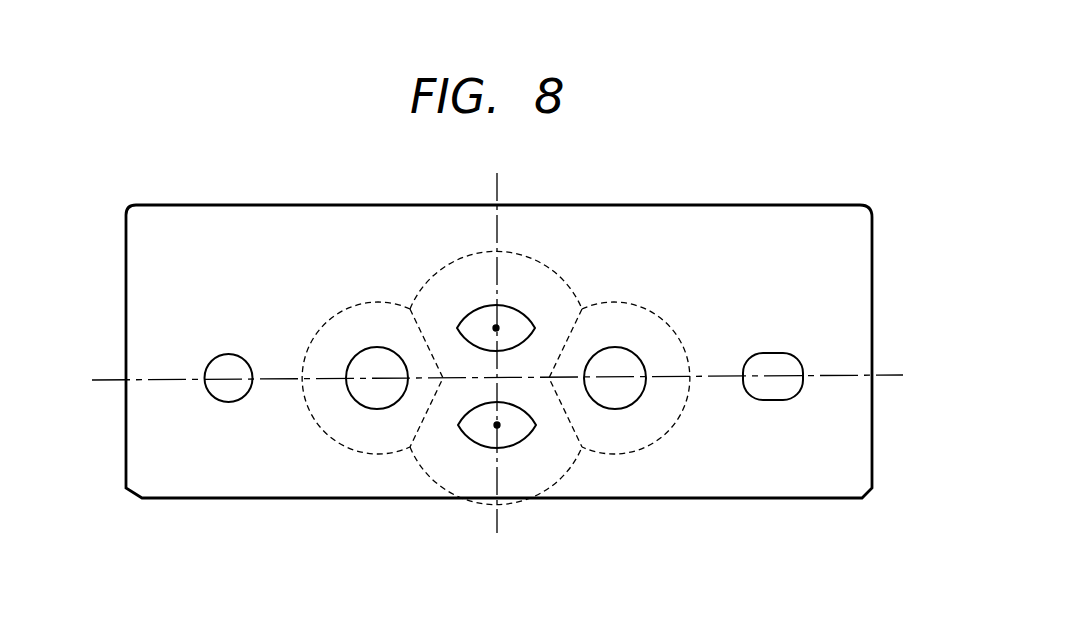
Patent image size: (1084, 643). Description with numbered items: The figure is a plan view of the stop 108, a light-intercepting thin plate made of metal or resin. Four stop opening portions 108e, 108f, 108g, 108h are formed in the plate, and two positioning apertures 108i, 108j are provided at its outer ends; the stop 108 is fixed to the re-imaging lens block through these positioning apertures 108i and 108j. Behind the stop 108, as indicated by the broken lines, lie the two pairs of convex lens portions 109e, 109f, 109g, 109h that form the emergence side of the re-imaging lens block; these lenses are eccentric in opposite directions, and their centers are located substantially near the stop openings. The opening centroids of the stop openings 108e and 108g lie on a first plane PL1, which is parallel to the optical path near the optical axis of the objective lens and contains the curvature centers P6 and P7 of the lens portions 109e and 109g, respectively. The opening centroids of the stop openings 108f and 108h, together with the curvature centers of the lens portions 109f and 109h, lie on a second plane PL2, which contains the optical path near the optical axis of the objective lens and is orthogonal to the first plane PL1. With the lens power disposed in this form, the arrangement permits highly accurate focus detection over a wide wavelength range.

The stop 108 is at (871, 256).
The stop opening portion 108e is at (520, 435).
The stop opening portion 108f is at (632, 348).
The stop opening portion 108g is at (522, 320).
The stop opening portion 108h is at (367, 347).
The positioning aperture 108i is at (222, 402).
The positioning aperture 108j is at (780, 400).
The lens portion 109e is at (430, 478).
The lens portion 109f is at (645, 447).
The lens portion 109g is at (462, 253).
The lens portion 109h is at (353, 450).
The curvature center P6 is at (495, 427).
The curvature center P7 is at (496, 328).
The first plane PL1 is at (500, 517).
The second plane PL2 is at (880, 375).